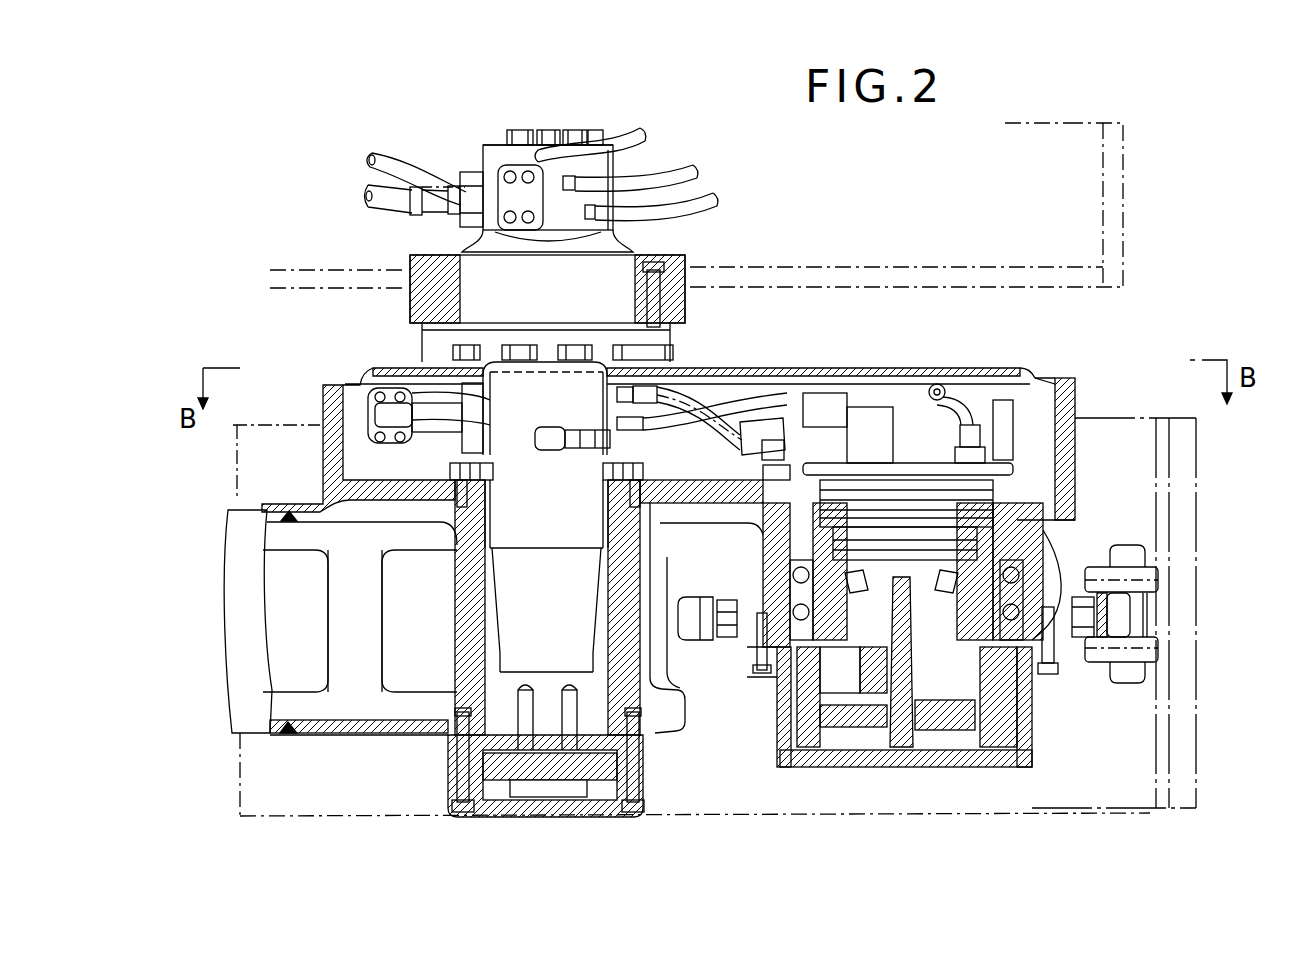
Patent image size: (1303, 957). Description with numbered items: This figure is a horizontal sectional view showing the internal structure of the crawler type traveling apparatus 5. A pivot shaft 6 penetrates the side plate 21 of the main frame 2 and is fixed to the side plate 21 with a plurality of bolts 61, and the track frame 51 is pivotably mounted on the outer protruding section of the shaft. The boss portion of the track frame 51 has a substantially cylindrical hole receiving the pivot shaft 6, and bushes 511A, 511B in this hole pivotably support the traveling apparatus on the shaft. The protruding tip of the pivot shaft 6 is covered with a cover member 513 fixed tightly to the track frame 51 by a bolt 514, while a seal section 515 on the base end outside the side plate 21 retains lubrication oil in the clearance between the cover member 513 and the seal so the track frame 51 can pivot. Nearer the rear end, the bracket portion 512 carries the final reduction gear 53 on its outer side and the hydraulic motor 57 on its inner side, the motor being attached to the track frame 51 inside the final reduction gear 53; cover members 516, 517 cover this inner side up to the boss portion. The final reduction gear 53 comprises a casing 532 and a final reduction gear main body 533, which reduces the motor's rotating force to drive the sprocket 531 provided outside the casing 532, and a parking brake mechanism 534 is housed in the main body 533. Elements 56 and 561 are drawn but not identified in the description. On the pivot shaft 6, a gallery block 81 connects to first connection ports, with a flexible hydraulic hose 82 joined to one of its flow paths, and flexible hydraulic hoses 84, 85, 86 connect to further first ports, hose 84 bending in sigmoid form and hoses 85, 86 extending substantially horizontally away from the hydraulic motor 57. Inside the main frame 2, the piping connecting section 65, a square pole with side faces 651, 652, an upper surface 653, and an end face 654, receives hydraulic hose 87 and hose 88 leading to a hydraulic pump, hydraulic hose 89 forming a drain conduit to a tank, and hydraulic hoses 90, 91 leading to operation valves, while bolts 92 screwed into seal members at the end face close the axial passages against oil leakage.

The main frame 2 is at (1017, 123).
The side plate 21 is at (878, 267).
The crawler type traveling apparatus 5 is at (890, 822).
The track frame 51 is at (243, 710).
The bush 511A is at (575, 672).
The bush 511B is at (578, 548).
The bracket portion 512 is at (693, 505).
The cover member 513 is at (555, 817).
The bolt 514 is at (460, 812).
The seal section 515 is at (452, 468).
The cover member 516 is at (770, 368).
The cover member 517 is at (378, 368).
The final reduction gear 53 is at (975, 780).
The sprocket 531 is at (1117, 613).
The casing 532 is at (1052, 665).
The final reduction gear main body 533 is at (900, 750).
The brake mechanism 534 is at (1075, 518).
The wheel 56 is at (1158, 690).
The rib 561 is at (465, 610).
The hydraulic motor 57 is at (872, 407).
The pivot shaft 6 is at (440, 510).
The bolts 61 is at (560, 348).
The piping connecting section 65 is at (488, 152).
The side face 651 is at (483, 150).
The side face 652 is at (612, 180).
The upper surface 653 is at (497, 147).
The end face 654 is at (558, 147).
The gallery block 81 is at (375, 415).
The flexible hydraulic hose 82 is at (662, 270).
The flexible hydraulic hose 84 is at (563, 405).
The flexible hydraulic hose 85 is at (985, 398).
The flexible hydraulic hose 86 is at (937, 384).
The hydraulic hose 87 is at (380, 152).
The hydraulic hose 88 is at (368, 195).
The hydraulic hose 89 is at (645, 133).
The hydraulic hose 90 is at (697, 171).
The hydraulic hose 91 is at (717, 200).
The bolts 92 is at (520, 129).